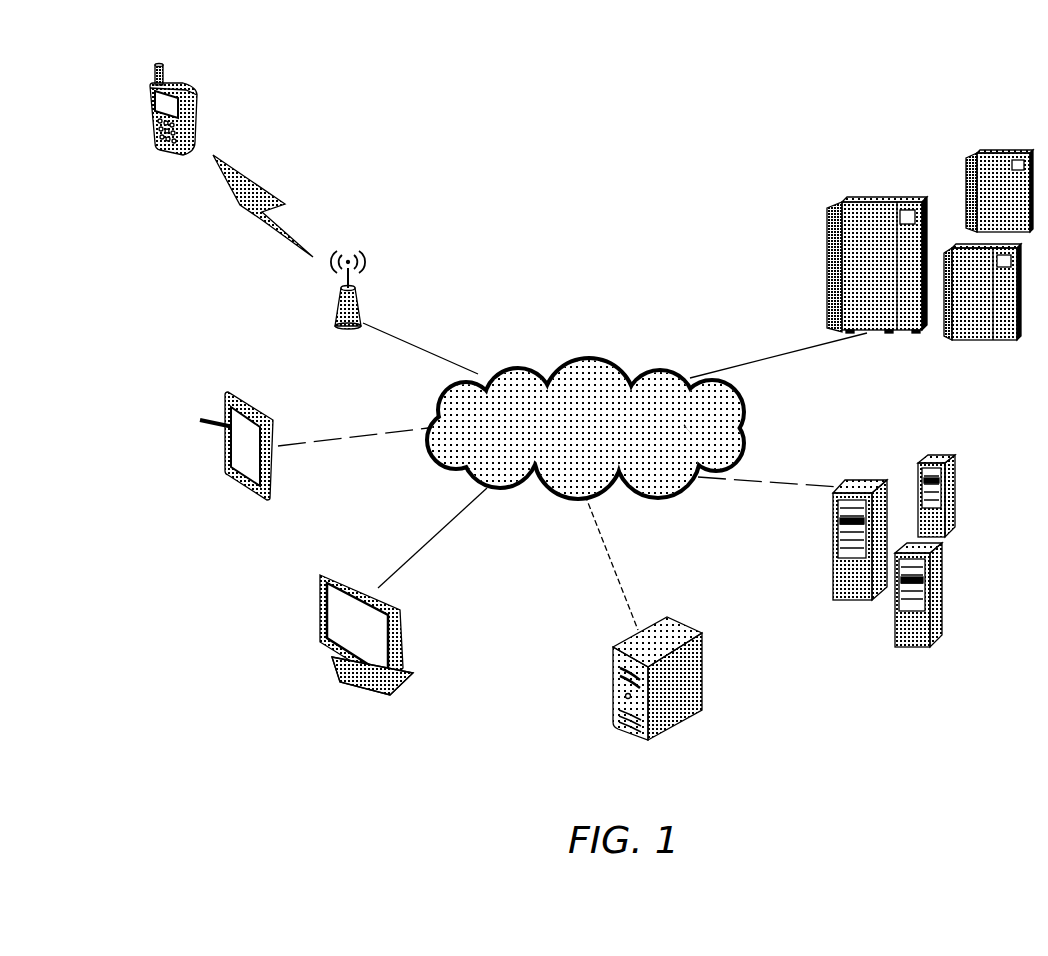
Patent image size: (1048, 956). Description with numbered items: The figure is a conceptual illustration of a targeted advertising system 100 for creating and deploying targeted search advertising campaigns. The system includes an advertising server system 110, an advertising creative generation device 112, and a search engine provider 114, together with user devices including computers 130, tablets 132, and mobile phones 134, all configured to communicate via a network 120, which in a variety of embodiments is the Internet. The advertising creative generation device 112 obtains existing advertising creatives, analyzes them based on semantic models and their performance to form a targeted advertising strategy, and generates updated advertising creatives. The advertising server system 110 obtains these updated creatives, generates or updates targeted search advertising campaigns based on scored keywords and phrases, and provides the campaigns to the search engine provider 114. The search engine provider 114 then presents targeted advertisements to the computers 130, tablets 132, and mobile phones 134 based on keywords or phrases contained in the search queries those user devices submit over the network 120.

The targeted advertising system 100 is at (693, 85).
The advertising server system 110 is at (875, 197).
The advertising creative generation device 112 is at (955, 490).
The search engine provider 114 is at (673, 628).
The network 120 is at (587, 362).
The computers 130 is at (327, 570).
The tablets 132 is at (228, 392).
The mobile phones 134 is at (198, 93).